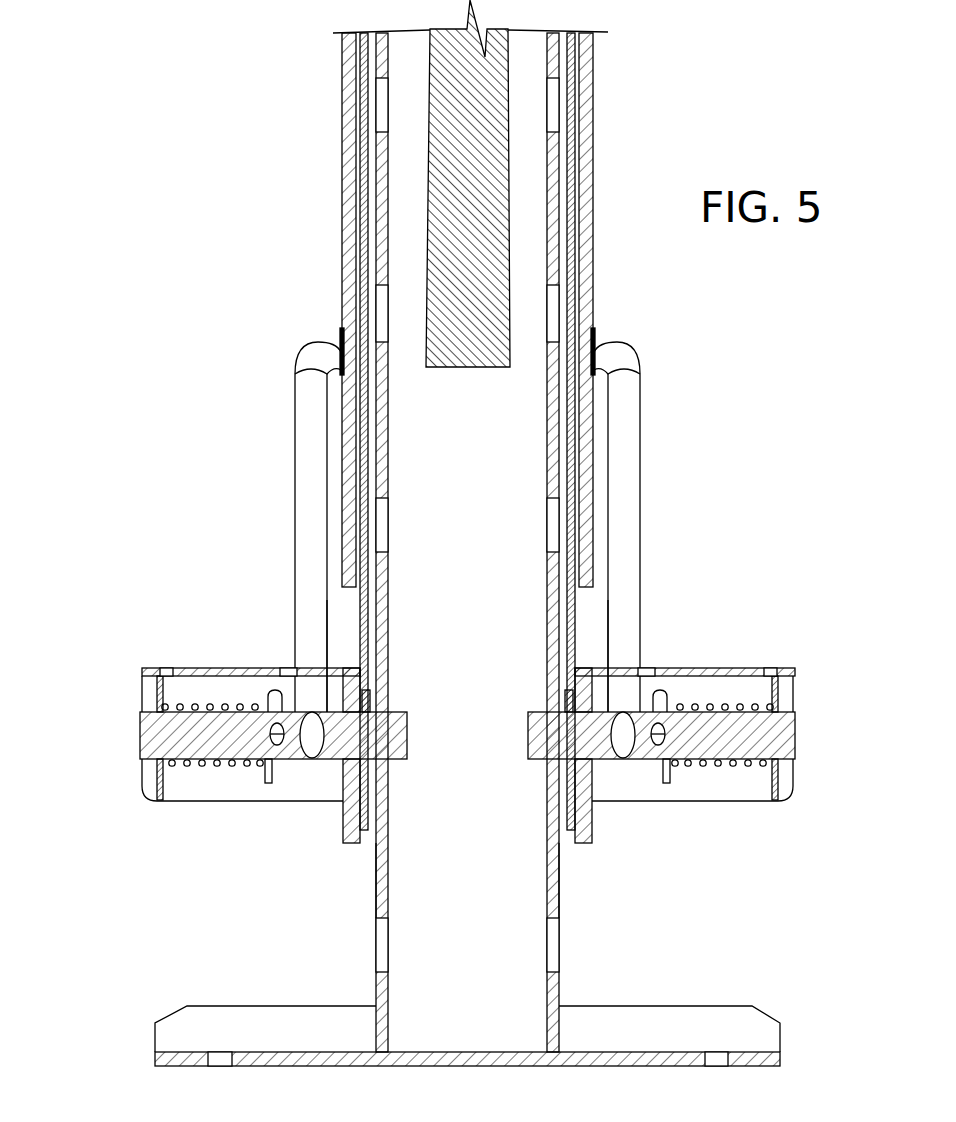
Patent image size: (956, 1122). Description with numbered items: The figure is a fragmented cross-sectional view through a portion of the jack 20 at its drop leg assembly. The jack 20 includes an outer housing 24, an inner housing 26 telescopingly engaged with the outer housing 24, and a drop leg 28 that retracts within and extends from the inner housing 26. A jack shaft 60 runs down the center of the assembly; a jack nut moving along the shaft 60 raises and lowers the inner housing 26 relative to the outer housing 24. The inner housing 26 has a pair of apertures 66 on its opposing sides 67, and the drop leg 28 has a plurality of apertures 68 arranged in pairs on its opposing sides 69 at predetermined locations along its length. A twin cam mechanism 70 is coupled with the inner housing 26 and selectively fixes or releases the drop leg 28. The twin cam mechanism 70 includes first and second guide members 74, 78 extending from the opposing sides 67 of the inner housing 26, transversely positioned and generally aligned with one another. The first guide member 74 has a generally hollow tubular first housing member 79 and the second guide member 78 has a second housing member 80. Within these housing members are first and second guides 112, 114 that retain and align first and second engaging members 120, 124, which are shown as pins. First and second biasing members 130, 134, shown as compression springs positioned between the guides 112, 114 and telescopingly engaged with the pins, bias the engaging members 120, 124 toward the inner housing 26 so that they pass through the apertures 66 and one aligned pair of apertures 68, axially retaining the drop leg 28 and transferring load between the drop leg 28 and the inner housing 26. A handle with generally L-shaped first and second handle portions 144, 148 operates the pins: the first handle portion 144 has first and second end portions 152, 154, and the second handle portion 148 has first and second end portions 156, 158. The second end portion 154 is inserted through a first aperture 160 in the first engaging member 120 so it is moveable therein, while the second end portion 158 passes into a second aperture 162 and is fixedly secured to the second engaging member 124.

The jack 20 is at (300, 172).
The outer housing 24 is at (348, 66).
The inner housing 26 is at (368, 597).
The drop leg 28 is at (376, 895).
The jack shaft 60 is at (480, 270).
The apertures 66 is at (376, 696).
The opposing sides 67 is at (350, 802).
The apertures 68 is at (383, 103).
The opposing sides 69 is at (376, 855).
The twin cam mechanism 70 is at (702, 862).
The first guide member 74 is at (765, 652).
The second guide member 78 is at (150, 645).
The first housing member 79 is at (710, 707).
The second housing member 80 is at (275, 690).
The first guide 112 is at (780, 682).
The second guide 114 is at (160, 686).
The first engaging member 120 is at (775, 732).
The second engaging member 124 is at (180, 736).
The first biasing member 130 is at (720, 677).
The second biasing member 134 is at (190, 710).
The first handle portion 144 is at (625, 465).
The second handle portion 148 is at (311, 462).
The first end portion 152 is at (620, 345).
The second end portion 154 is at (625, 700).
The first end portion 156 is at (320, 345).
The second end portion 158 is at (318, 690).
The first aperture 160 is at (655, 700).
The second aperture 162 is at (310, 735).